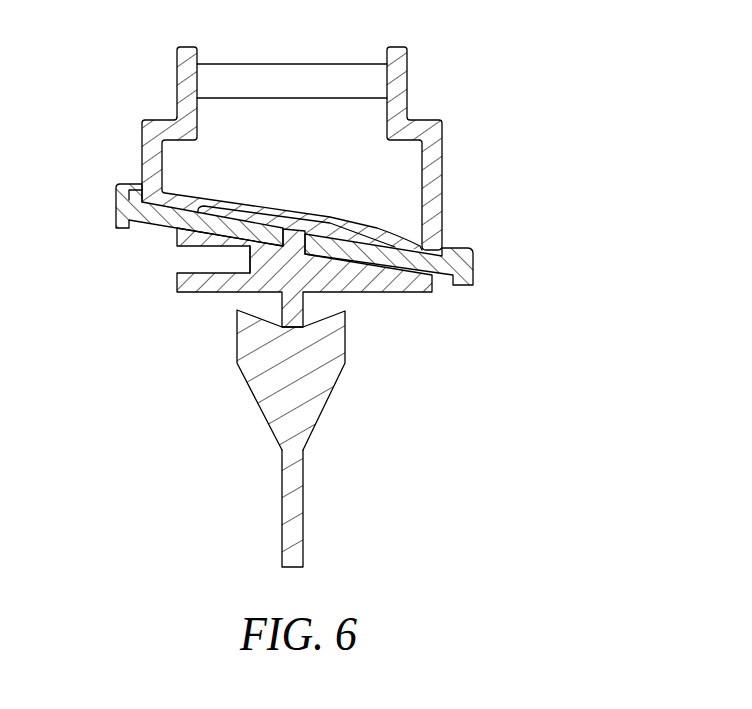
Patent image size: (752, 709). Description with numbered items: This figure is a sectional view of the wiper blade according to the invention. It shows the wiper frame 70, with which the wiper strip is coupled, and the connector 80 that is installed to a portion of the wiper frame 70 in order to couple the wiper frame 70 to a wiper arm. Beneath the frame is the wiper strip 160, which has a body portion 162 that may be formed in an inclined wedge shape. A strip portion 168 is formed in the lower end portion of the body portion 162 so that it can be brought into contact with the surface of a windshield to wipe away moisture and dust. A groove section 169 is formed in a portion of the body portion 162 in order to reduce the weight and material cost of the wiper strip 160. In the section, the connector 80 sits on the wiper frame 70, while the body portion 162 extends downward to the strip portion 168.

The connector 80 is at (410, 94).
The wiper frame 70 is at (444, 278).
The wiper strip 160 is at (201, 368).
The body portion 162 is at (282, 270).
The strip portion 168 is at (295, 497).
The groove section 169 is at (245, 267).